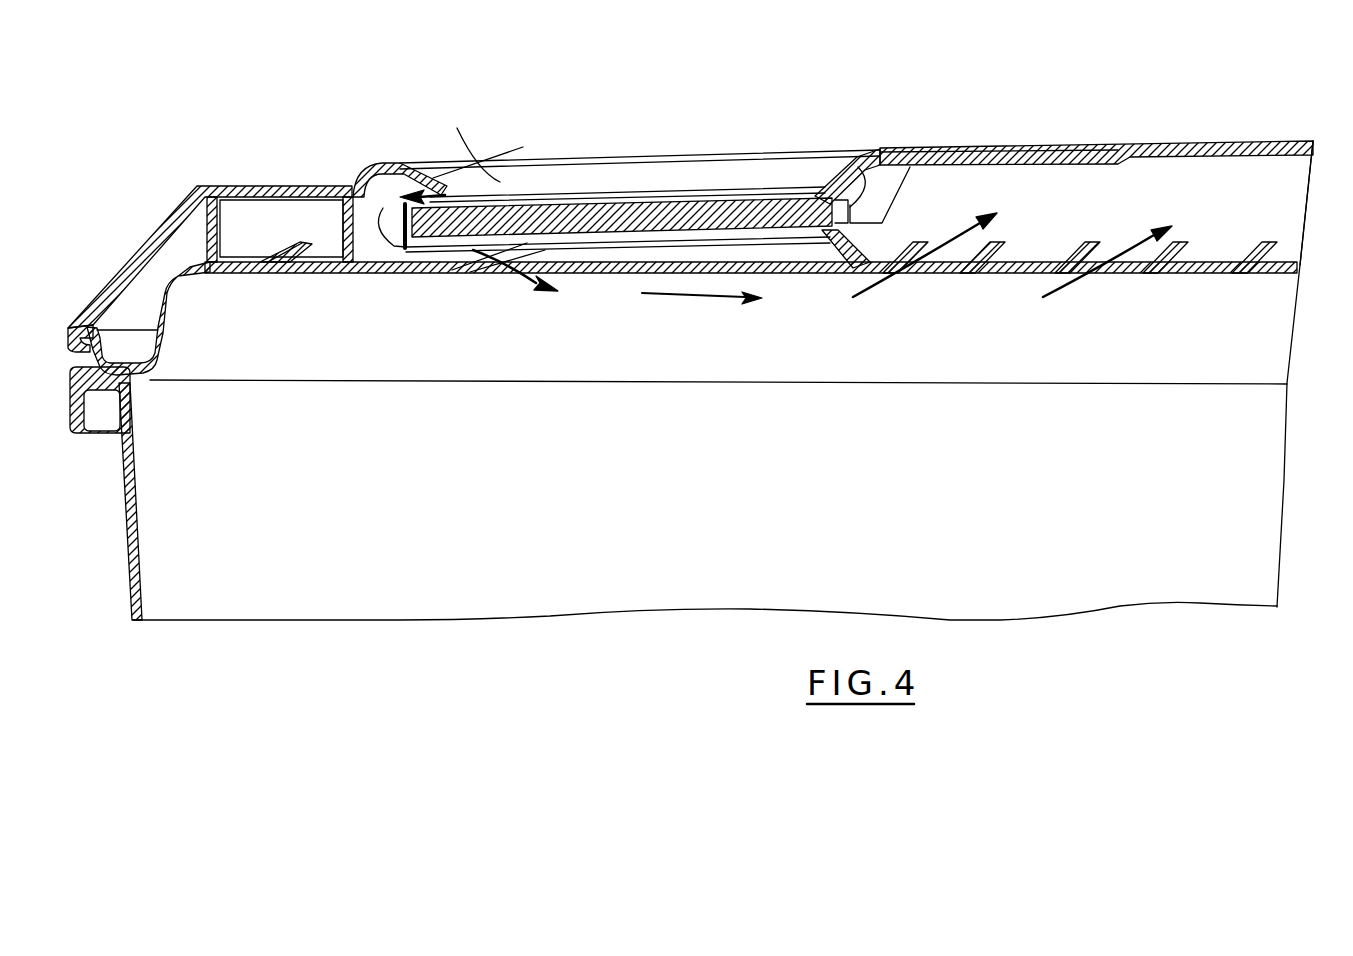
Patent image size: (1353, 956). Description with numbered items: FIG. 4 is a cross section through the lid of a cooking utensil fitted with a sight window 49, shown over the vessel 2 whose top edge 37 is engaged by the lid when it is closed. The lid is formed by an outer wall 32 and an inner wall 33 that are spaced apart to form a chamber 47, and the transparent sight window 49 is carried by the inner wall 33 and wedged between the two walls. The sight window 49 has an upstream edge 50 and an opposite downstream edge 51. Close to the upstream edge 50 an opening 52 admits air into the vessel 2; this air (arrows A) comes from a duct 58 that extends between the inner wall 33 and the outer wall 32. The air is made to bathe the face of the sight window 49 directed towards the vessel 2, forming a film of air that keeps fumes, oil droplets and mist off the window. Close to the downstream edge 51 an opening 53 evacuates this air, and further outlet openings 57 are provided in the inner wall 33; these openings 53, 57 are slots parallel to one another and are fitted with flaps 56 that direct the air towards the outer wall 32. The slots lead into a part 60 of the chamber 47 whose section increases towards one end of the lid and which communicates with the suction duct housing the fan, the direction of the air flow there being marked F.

The vessel 2 is at (142, 518).
The outer wall 32 is at (1056, 148).
The inner wall 33 is at (357, 277).
The top edge 37 is at (128, 390).
The chamber 47 is at (963, 190).
The sight window 49 is at (680, 215).
The upstream edge 50 is at (368, 213).
The downstream edge 51 is at (878, 158).
The opening for the admission of air 52 is at (497, 262).
The opening for the evacuation of air 53 is at (456, 275).
The flap 56 is at (1265, 273).
The outlet openings 57 is at (307, 274).
The duct 58 is at (353, 190).
The part of the chamber 60 is at (1181, 190).
The arrows A is at (863, 327).
The flow direction F is at (1073, 295).